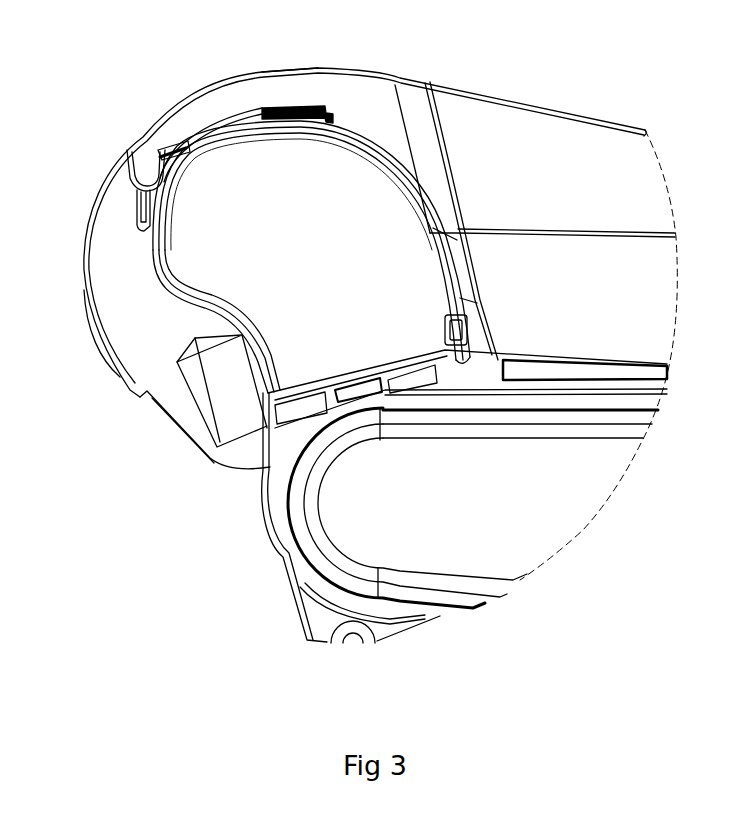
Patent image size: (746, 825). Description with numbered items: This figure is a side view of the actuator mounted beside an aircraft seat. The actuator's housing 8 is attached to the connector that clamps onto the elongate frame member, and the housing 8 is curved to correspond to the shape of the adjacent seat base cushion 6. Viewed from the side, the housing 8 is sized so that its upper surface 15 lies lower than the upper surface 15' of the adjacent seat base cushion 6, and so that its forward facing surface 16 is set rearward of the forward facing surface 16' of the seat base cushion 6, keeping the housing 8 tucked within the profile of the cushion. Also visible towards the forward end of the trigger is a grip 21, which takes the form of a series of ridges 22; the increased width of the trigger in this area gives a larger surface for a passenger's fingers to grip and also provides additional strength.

The seat base cushion 6 is at (258, 85).
The housing 8 is at (379, 189).
The upper surface 15 is at (315, 202).
The upper surface 15' is at (315, 42).
The forward facing surface 16 is at (361, 447).
The forward facing surface 16' is at (79, 317).
The grip 21 is at (152, 162).
The ridges 22 is at (163, 160).